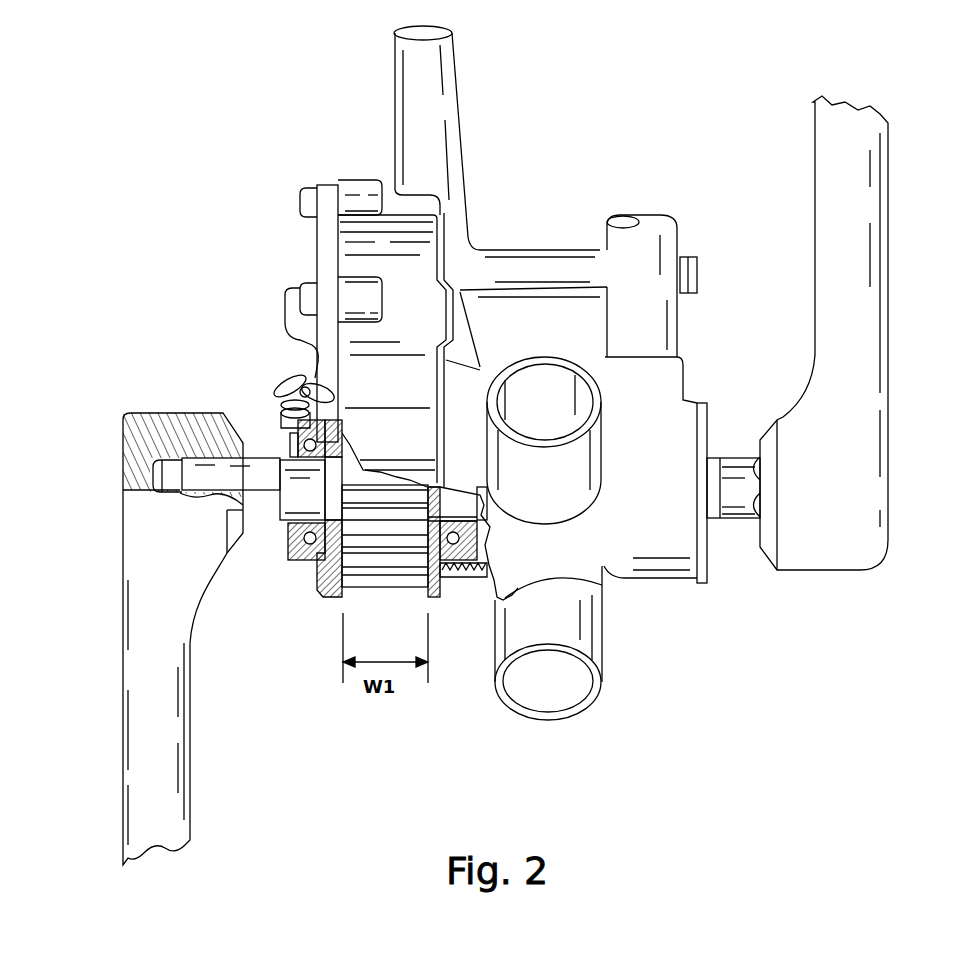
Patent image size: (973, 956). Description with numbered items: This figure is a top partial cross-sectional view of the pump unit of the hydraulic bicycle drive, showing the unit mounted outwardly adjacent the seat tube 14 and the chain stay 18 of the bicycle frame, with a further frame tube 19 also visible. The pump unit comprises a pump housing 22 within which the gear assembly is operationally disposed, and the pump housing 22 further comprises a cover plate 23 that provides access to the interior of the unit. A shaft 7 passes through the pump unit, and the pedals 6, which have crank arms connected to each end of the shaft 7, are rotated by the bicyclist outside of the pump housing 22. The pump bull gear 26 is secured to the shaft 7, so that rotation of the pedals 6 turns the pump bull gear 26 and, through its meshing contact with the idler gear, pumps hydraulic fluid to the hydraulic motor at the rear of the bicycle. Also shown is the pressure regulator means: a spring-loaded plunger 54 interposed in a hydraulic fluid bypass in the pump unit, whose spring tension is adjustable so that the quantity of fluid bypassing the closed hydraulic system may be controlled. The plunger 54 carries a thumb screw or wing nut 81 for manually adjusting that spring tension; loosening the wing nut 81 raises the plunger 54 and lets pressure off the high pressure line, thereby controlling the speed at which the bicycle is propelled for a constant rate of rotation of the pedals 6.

The pedals 6 is at (147, 675).
The shaft 7 is at (267, 493).
The seat tube 14 is at (547, 387).
The chain stay 18 is at (422, 100).
The conduit pipe 19 is at (550, 685).
The pump housing 22 is at (355, 268).
The cover plate 23 is at (327, 232).
The pump bull gear 26 is at (383, 553).
The spring-loaded plunger 54 is at (285, 413).
The wing nut 81 is at (290, 383).